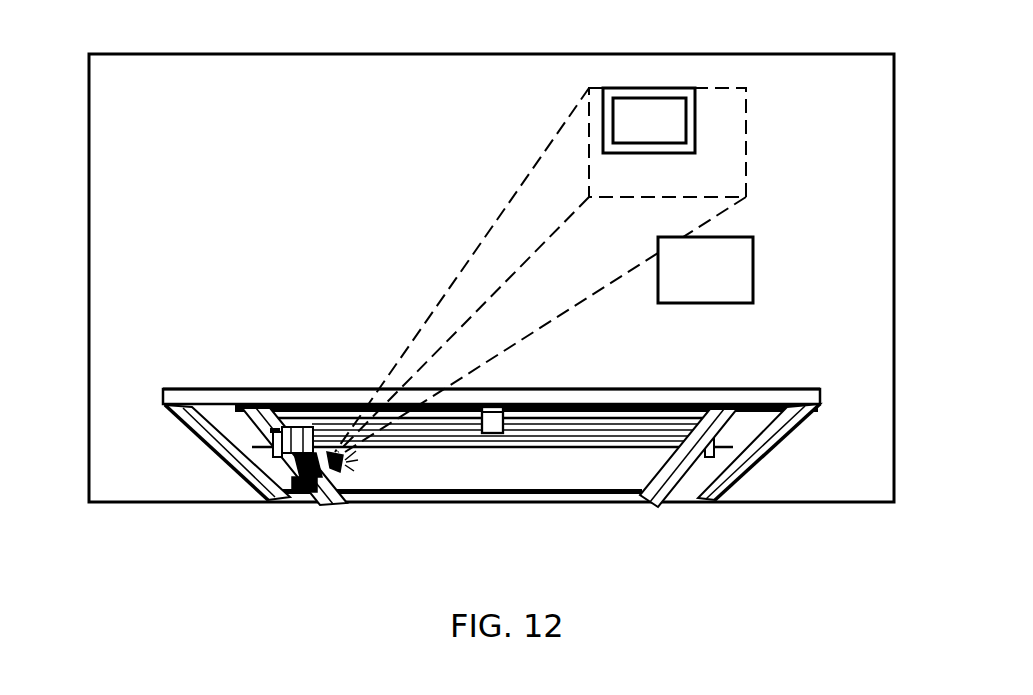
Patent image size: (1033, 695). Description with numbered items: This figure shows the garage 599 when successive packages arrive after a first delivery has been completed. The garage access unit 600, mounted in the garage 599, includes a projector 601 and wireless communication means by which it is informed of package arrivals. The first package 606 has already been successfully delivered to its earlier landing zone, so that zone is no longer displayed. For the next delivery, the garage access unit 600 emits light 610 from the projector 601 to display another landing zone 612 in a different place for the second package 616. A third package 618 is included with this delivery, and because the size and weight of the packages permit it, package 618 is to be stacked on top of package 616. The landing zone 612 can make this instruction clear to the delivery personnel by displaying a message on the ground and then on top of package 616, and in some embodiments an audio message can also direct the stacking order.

The garage 599 is at (200, 107).
The garage access unit 600 is at (312, 517).
The projector 601 is at (332, 460).
The package 606 is at (753, 267).
The light 610 is at (515, 200).
The landing zone 612 is at (747, 132).
The package 616 is at (620, 88).
The package 618 is at (672, 97).